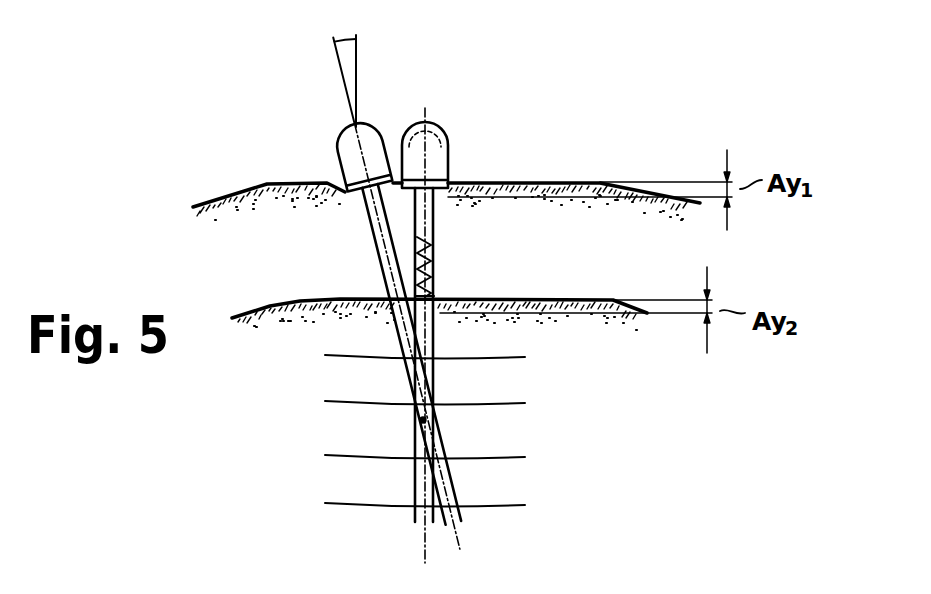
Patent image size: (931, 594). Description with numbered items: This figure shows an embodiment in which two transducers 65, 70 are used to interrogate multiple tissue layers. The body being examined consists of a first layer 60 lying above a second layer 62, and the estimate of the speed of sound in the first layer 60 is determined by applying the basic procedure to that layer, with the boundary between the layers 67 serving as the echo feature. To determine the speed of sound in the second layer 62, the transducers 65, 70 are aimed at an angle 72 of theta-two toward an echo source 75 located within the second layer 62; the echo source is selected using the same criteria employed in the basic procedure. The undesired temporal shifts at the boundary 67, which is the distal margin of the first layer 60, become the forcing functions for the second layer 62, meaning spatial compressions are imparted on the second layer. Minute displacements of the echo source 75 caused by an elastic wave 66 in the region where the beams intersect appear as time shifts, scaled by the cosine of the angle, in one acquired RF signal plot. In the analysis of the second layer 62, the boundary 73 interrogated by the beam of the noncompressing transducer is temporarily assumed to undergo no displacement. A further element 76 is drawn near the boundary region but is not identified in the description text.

The first layer 60 is at (592, 254).
The second layer 62 is at (298, 402).
The transducer 65 is at (440, 160).
The elastic wave 66 is at (525, 357).
The boundary between the layers 67 is at (433, 283).
The transducer 70 is at (338, 147).
The angle 72 is at (333, 26).
The boundary 73 is at (385, 298).
The echo source 75 is at (415, 427).
The spring stop 76 is at (437, 298).